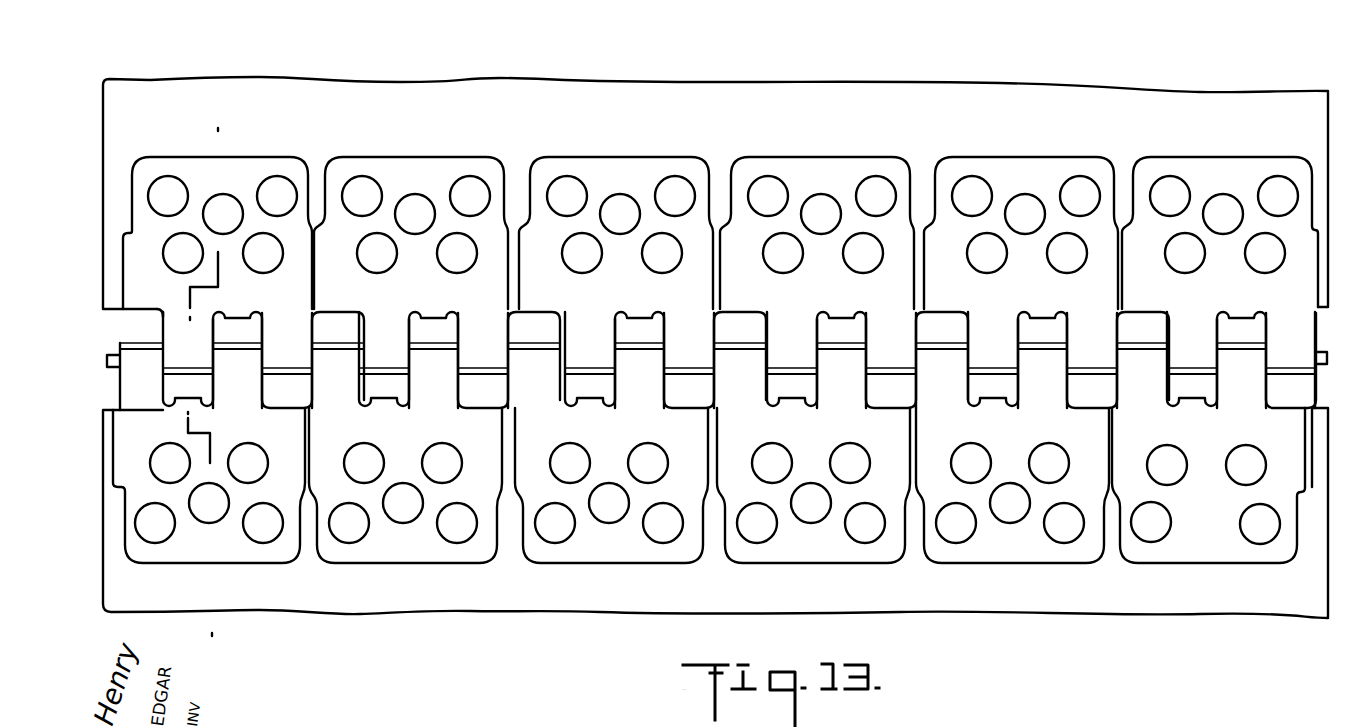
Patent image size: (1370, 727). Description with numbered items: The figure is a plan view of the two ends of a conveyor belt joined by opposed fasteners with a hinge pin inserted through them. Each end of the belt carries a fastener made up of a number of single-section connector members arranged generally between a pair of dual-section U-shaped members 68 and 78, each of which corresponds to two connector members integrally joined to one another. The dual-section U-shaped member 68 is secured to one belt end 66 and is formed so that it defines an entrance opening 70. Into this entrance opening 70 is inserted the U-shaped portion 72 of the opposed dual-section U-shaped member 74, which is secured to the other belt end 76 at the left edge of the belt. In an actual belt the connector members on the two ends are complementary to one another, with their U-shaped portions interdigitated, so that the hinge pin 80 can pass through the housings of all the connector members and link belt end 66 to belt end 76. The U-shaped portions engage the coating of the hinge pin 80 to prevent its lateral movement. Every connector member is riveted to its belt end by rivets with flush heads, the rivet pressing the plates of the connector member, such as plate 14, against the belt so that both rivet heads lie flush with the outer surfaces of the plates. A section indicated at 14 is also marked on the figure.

The belt end 66 is at (712, 88).
The dual-section U-shaped member 68 is at (147, 250).
The entrance opening 70 is at (132, 327).
The U-shaped portion 72 is at (132, 386).
The dual-section U-shaped member 74 is at (187, 545).
The belt end 76 is at (558, 595).
The dual-section U-shaped member 78 is at (1302, 263).
The hinge pin 80 is at (1322, 350).
The plate 14 is at (262, 658).